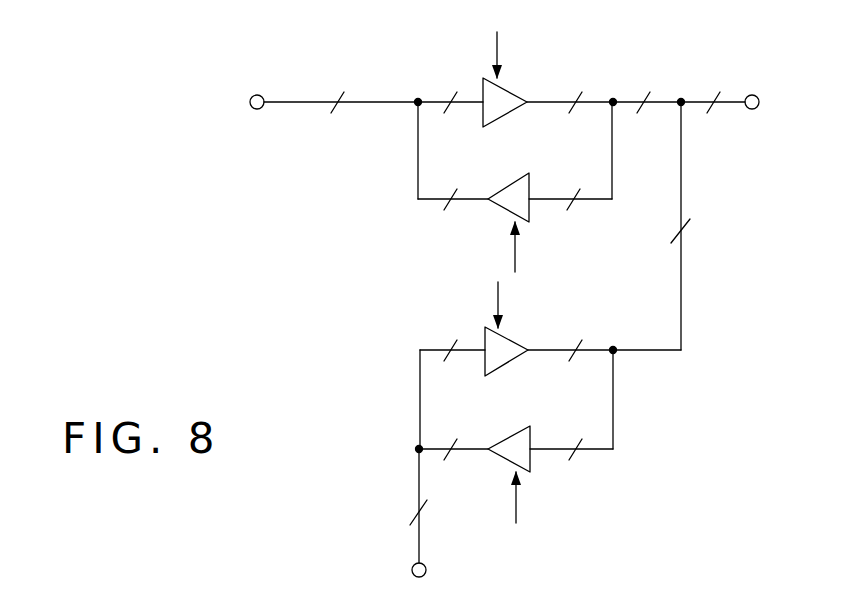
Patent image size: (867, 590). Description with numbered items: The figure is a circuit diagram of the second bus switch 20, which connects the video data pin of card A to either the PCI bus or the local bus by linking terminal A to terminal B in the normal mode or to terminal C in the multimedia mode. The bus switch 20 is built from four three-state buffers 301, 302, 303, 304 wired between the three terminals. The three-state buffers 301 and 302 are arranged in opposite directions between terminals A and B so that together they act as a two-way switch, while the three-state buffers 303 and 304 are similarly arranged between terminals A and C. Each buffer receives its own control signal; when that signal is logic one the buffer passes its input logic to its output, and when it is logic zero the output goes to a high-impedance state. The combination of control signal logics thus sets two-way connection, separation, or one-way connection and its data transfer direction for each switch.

The bus switch 20 is at (505, 298).
The 3-state buffer 301 is at (521, 90).
The 3-state buffer 302 is at (511, 182).
The 3-state buffer 303 is at (520, 347).
The 3-state buffer 304 is at (512, 432).